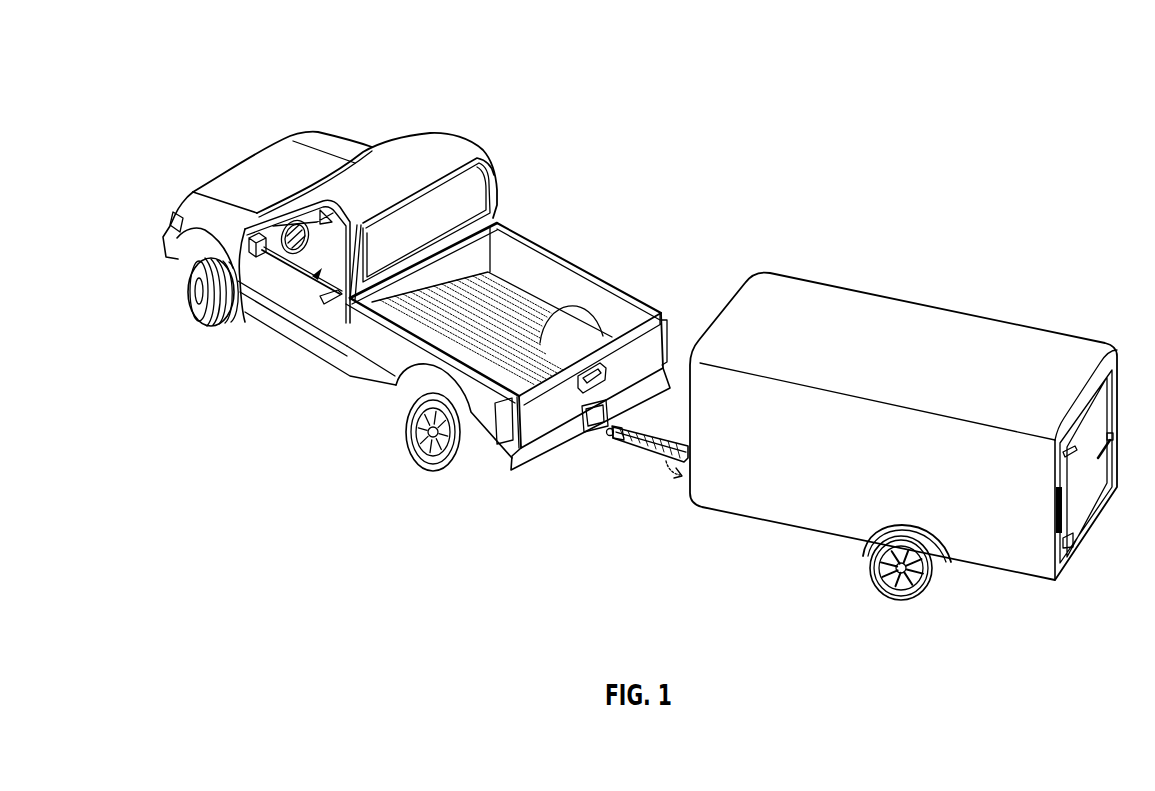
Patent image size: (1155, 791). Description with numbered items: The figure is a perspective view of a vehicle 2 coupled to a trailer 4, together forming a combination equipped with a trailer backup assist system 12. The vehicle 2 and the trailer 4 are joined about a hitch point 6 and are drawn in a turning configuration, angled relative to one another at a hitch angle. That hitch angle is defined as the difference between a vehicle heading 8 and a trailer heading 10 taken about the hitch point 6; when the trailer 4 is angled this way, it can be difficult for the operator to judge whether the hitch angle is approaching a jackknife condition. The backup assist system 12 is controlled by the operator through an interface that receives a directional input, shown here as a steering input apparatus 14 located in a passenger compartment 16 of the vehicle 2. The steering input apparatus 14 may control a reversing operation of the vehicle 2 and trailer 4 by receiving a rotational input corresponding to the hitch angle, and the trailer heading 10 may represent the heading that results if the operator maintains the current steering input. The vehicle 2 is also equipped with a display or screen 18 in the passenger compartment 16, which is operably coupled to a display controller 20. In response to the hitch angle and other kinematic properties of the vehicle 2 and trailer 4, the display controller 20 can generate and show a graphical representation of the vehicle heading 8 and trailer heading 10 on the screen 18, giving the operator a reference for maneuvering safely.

The vehicle 2 is at (496, 79).
The trailer 4 is at (974, 273).
The hitch point 6 is at (604, 431).
The vehicle heading 8 is at (672, 468).
The trailer heading 10 is at (657, 440).
The backup assist system 12 is at (226, 153).
The display controller 20 is at (416, 299).
The steering input apparatus 14 is at (296, 258).
The passenger compartment 16 is at (326, 272).
The screen 18 is at (268, 258).